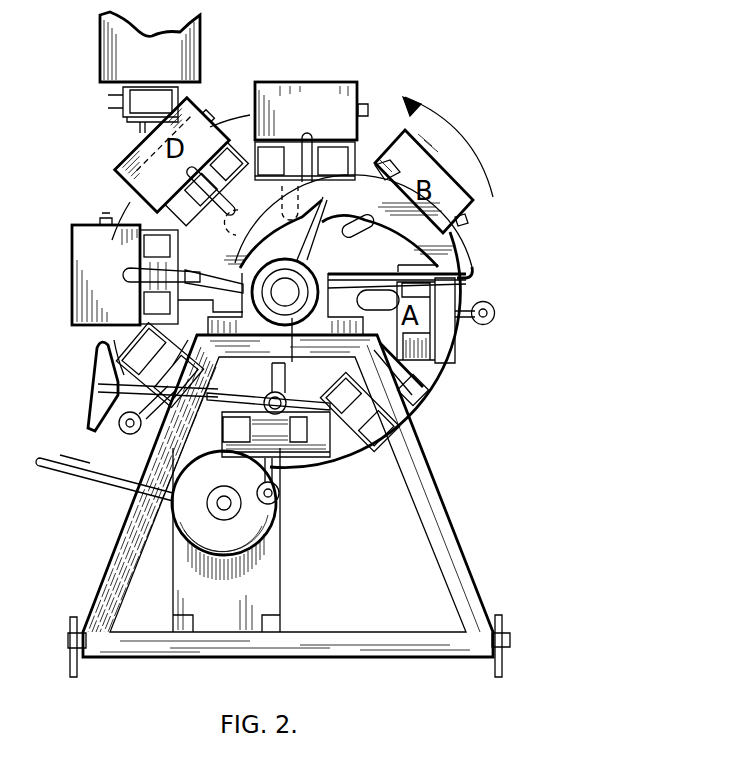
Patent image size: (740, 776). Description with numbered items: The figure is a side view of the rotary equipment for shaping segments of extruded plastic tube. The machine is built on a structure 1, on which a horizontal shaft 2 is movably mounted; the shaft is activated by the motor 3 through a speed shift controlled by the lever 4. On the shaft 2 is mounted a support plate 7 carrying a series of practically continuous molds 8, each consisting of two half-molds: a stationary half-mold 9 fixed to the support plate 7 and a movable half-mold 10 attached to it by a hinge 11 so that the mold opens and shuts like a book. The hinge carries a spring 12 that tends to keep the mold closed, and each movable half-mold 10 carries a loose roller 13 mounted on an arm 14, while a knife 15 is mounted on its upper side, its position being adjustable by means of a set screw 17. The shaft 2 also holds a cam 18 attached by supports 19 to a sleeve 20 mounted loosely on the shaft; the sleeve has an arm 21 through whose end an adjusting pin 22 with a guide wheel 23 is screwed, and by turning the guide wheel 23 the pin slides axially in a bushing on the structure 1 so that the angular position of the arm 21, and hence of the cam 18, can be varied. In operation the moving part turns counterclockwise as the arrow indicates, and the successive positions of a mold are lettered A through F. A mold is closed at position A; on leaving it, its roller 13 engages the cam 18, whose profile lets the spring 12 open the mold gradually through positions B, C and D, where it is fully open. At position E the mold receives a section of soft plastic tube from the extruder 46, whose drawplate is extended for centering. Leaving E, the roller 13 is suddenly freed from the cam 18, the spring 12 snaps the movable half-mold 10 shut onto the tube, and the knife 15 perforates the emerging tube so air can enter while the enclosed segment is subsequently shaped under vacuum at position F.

The structure 1 is at (427, 478).
The horizontal shaft 2 is at (278, 285).
The motor 3 is at (260, 528).
The lever 4 is at (70, 475).
The support plate 7 is at (431, 380).
The mold 8 is at (435, 172).
The stationary half-mold 9 is at (172, 247).
The movable half-mold 10 is at (75, 265).
The hinge 11 is at (295, 138).
The spring 12 is at (140, 317).
The loose roller 13 is at (495, 310).
The arm 14 is at (470, 302).
The knife 15 is at (122, 355).
The set screw 17 is at (330, 467).
The cam 18 is at (460, 253).
The supports 19 is at (317, 242).
The sleeve 20 is at (295, 360).
The arm 21 is at (273, 378).
The adjusting pin 22 is at (300, 403).
The guide wheel 23 is at (95, 372).
The extruder 46 is at (110, 55).